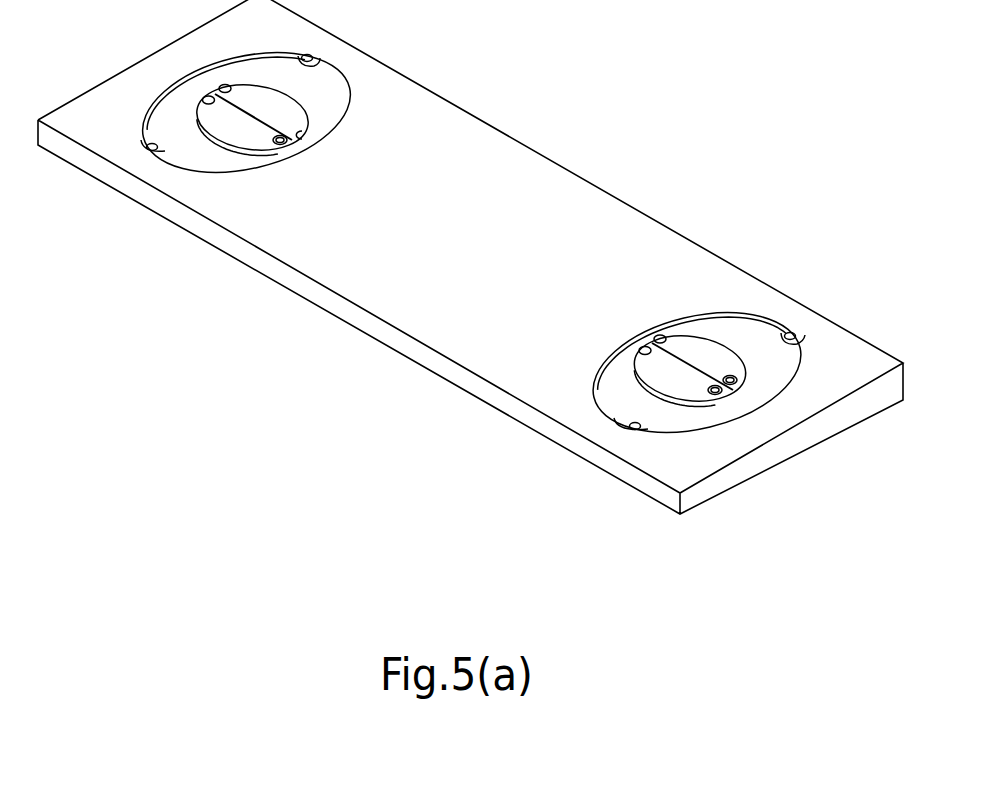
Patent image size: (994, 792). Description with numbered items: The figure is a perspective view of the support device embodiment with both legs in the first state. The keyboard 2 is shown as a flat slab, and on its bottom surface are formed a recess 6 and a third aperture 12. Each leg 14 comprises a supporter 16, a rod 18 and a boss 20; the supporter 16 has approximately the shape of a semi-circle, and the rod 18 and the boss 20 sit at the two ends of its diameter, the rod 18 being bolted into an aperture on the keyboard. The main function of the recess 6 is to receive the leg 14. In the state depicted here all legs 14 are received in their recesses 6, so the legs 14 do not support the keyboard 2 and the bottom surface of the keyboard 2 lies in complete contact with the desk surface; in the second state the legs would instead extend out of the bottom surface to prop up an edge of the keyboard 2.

The keyboard 2 is at (605, 189).
The recess 6 is at (737, 332).
The third aperture 12 is at (797, 336).
The leg 14 is at (698, 322).
The supporter 16 is at (707, 353).
The rod 18 is at (733, 397).
The boss 20 is at (654, 339).